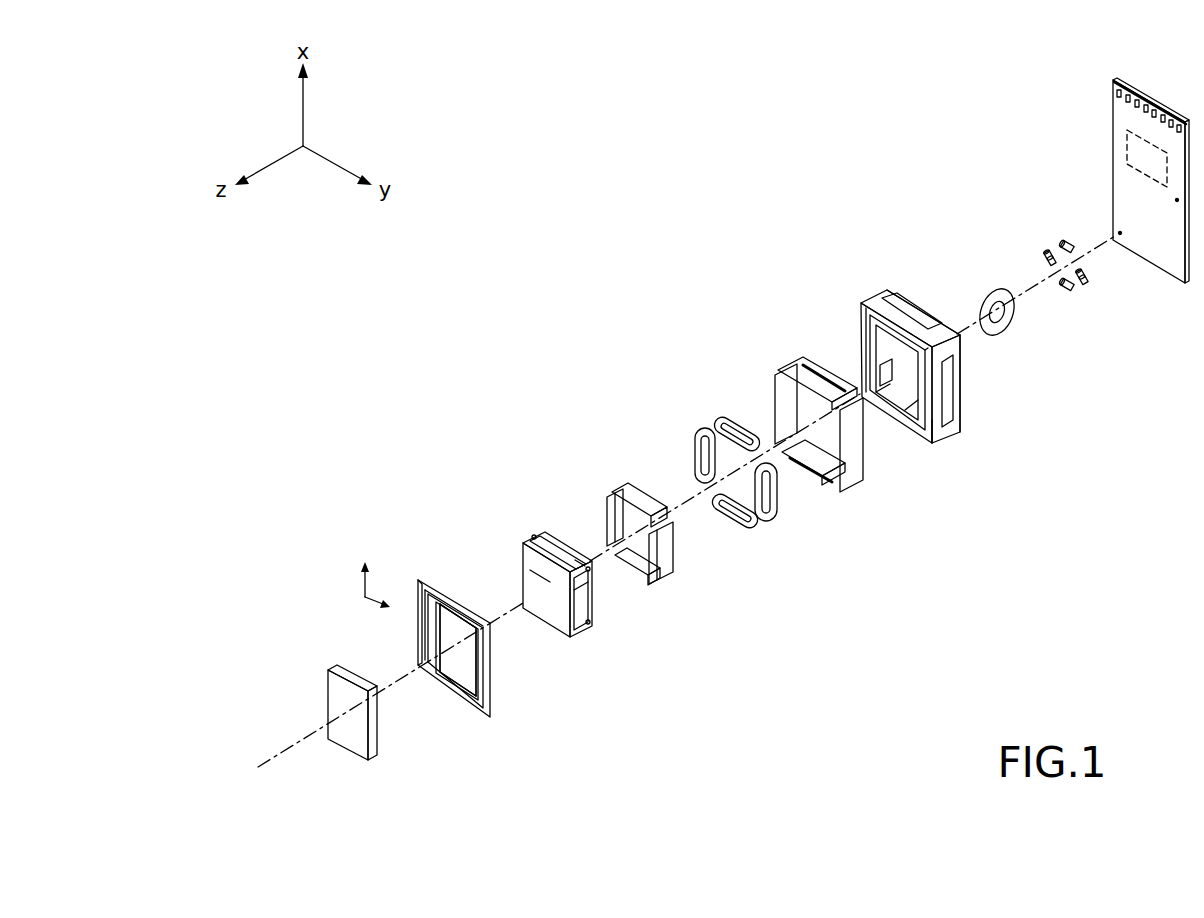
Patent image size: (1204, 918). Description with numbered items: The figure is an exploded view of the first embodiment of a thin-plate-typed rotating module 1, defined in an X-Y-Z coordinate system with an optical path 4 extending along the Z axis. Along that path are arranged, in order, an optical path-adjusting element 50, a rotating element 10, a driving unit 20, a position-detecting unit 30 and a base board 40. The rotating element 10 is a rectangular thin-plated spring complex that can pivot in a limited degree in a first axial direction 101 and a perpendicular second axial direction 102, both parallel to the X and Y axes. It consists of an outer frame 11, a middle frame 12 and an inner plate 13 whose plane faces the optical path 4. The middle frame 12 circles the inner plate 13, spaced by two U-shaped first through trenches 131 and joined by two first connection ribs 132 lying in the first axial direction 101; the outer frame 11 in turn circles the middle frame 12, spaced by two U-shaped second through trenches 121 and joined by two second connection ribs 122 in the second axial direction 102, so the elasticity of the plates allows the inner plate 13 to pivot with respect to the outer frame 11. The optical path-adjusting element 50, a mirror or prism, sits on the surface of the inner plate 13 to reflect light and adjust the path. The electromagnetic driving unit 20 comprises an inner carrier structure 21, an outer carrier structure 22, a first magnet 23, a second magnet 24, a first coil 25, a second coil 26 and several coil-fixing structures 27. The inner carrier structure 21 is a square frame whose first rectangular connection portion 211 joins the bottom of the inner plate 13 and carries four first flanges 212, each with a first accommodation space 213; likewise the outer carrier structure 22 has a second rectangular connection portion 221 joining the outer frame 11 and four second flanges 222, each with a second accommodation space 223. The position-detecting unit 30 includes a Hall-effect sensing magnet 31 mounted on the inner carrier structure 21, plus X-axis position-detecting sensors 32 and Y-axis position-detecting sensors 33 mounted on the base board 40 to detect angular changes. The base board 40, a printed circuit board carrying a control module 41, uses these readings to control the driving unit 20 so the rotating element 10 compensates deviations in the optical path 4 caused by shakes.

The thin-plate-typed rotating module 1 is at (533, 279).
The optical path 4 is at (282, 753).
The rotating element 10 is at (394, 556).
The first axial direction 101 is at (362, 577).
The second axial direction 102 is at (372, 602).
The outer frame 11 is at (488, 707).
The middle frame 12 is at (483, 708).
The inner plate 13 is at (433, 672).
The second through trench 121 is at (433, 590).
The second connection rib 122 is at (420, 628).
The first through trench 131 is at (463, 612).
The first connection rib 132 is at (447, 687).
The optical path-adjusting element 50 is at (335, 663).
The driving unit 20 is at (745, 448).
The inner carrier structure 21 is at (525, 545).
The first rectangular connection portion 211 is at (553, 612).
The first flange 212 is at (588, 628).
The first accommodation space 213 is at (568, 552).
The outer carrier structure 22 is at (860, 300).
The second rectangular connection portion 221 is at (927, 430).
The second flange 222 is at (883, 292).
The second accommodation space 223 is at (876, 345).
The first magnet 23 is at (613, 510).
The second magnet 24 is at (632, 487).
The first coil 25 is at (693, 445).
The second coil 26 is at (723, 418).
The coil-fixing structure 27 is at (803, 377).
The position-detecting unit 30 is at (1039, 246).
The Hall-effect sensing magnet 31 is at (985, 293).
The X-axis position-detecting sensor 32 is at (1045, 255).
The Y-axis position-detecting sensor 33 is at (1065, 243).
The base board 40 is at (1115, 105).
The control module 41 is at (1127, 157).